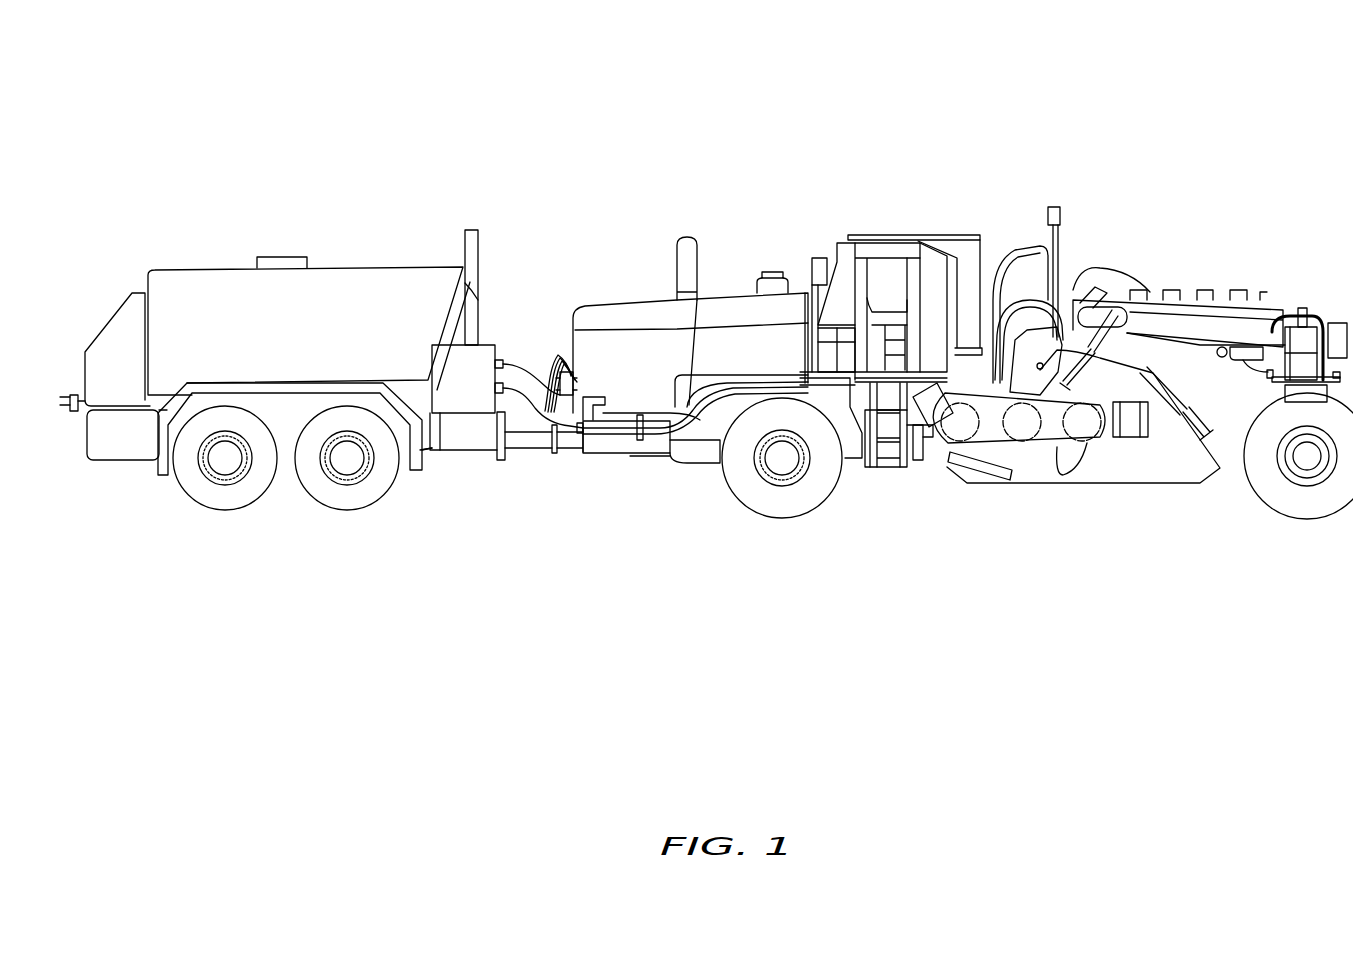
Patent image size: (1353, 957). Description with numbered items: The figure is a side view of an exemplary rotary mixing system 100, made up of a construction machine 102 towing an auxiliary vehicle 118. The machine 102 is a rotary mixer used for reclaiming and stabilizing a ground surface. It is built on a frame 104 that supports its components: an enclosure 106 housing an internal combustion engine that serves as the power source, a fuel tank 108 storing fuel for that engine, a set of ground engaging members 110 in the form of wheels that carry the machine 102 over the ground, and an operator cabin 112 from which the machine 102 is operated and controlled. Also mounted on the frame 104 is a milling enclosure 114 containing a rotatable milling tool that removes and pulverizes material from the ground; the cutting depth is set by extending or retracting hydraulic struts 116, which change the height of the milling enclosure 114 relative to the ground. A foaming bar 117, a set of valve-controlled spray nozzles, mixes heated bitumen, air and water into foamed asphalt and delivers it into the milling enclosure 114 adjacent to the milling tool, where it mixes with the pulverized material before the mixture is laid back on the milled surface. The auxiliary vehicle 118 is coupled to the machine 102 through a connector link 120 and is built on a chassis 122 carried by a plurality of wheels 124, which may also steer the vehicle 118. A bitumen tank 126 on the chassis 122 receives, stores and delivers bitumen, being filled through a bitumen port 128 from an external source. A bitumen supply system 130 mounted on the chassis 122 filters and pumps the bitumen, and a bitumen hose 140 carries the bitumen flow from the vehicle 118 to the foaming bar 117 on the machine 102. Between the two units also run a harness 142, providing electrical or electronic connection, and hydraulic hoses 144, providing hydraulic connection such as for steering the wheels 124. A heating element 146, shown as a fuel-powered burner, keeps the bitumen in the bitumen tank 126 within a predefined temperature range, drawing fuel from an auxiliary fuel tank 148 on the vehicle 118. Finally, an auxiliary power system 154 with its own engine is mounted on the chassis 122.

The rotary mixing system 100 is at (832, 144).
The construction machine 102 is at (1122, 239).
The frame 104 is at (1027, 313).
The enclosure 106 is at (759, 366).
The fuel tank 108 is at (1212, 297).
The ground engaging members 110 is at (782, 512).
The operator cabin 112 is at (865, 263).
The milling enclosure 114 is at (1164, 475).
The hydraulic struts 116 is at (1170, 382).
The foaming bar 117 is at (1047, 370).
The auxiliary vehicle 118 is at (328, 225).
The connector link 120 is at (528, 455).
The chassis 122 is at (477, 437).
The wheels 124 is at (223, 503).
The bitumen tank 126 is at (312, 333).
The bitumen port 128 is at (68, 404).
The bitumen supply system 130 is at (134, 380).
The bitumen hose 140 is at (572, 427).
The harness 142 is at (518, 352).
The hydraulic hoses 144 is at (553, 353).
The heating element 146 is at (473, 323).
The auxiliary fuel tank 148 is at (142, 443).
The auxiliary power system 154 is at (484, 395).